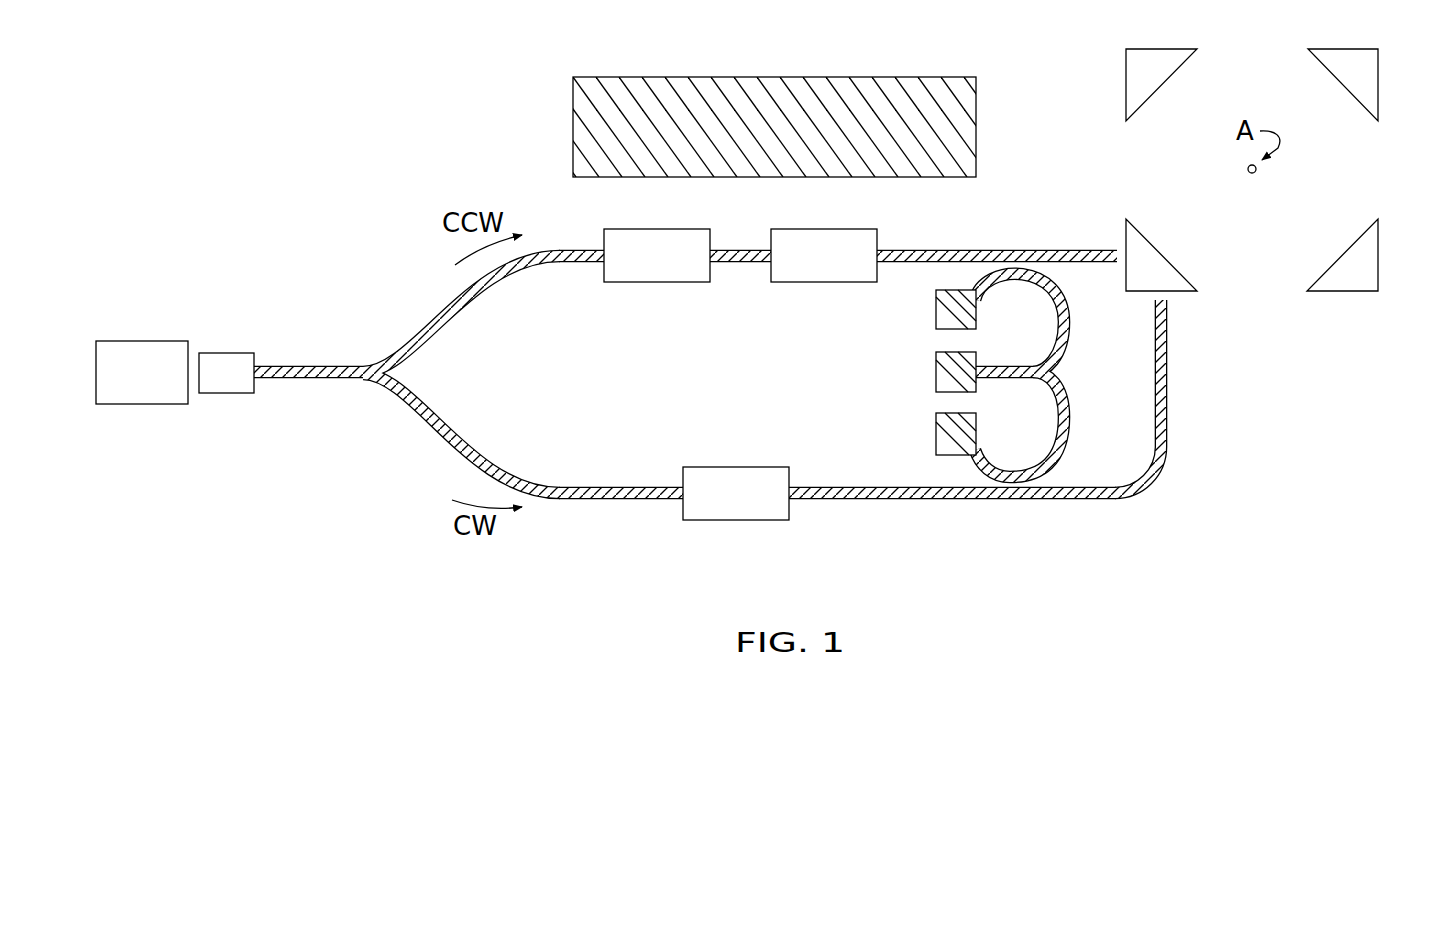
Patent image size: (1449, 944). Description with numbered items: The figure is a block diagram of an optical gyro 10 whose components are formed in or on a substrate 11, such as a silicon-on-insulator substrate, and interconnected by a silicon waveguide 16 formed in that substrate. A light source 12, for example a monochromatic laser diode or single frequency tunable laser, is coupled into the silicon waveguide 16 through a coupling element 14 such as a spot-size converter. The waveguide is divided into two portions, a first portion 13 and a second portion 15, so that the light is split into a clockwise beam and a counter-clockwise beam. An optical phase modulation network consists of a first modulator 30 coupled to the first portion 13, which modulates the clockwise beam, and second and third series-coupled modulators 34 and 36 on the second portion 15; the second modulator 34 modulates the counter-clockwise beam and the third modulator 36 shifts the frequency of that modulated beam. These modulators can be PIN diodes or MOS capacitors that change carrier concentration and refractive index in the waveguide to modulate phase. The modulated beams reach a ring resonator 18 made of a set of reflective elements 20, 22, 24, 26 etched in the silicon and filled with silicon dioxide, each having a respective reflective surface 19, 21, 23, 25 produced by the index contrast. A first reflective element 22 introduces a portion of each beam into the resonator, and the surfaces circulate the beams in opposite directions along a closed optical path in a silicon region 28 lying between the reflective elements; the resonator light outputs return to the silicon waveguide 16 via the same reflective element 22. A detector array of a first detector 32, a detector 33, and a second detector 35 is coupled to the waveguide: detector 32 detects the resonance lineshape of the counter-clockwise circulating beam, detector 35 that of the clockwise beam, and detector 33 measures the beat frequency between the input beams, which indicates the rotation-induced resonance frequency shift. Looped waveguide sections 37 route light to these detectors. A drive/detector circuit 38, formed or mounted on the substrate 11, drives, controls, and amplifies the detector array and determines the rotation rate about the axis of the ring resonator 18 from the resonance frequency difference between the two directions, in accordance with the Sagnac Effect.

The optical gyro 10 is at (227, 192).
The substrate 11 is at (483, 392).
The light source 12 is at (146, 338).
The first portion of the waveguide 13 is at (556, 500).
The coupling element 14 is at (229, 398).
The second portion of the waveguide 15 is at (512, 263).
The silicon waveguide 16 is at (1186, 462).
The ring resonator 18 is at (1400, 167).
The reflective surface 19 is at (1370, 226).
The reflective element 20 is at (1378, 264).
The reflective surface 21 is at (1131, 226).
The first reflective element 22 is at (1126, 228).
The reflective surface 23 is at (1331, 73).
The reflective element 24 is at (1378, 77).
The reflective surface 25 is at (1175, 73).
The reflective element 26 is at (1126, 79).
The silicon region 28 is at (1270, 240).
The first modulator 30 is at (704, 467).
The first detector 32 is at (934, 428).
The detector 33 is at (934, 372).
The second modulator 34 is at (644, 283).
The second detector 35 is at (934, 316).
The third modulator 36 is at (790, 283).
The fiber loop 37 is at (1071, 322).
The drive/detector circuit 38 is at (576, 116).